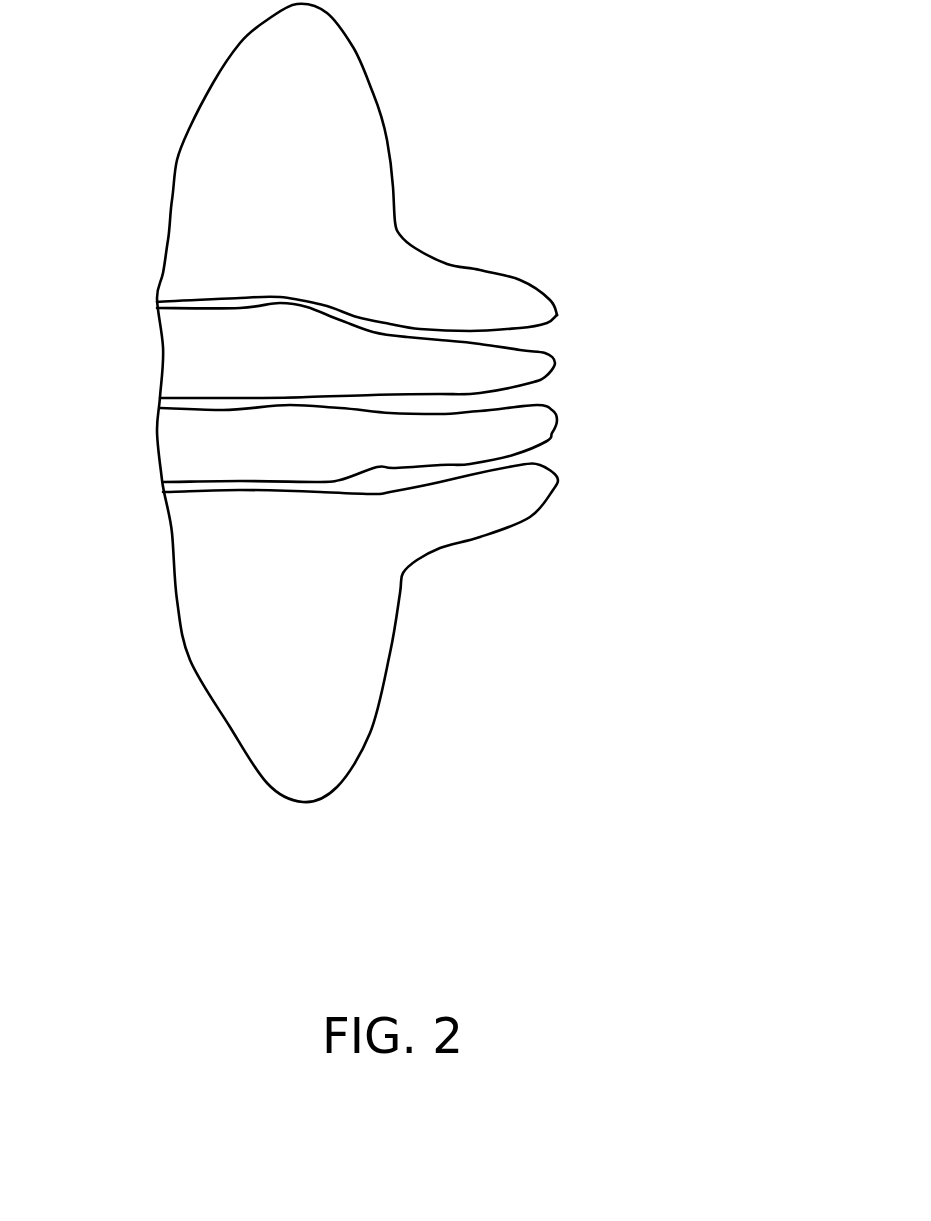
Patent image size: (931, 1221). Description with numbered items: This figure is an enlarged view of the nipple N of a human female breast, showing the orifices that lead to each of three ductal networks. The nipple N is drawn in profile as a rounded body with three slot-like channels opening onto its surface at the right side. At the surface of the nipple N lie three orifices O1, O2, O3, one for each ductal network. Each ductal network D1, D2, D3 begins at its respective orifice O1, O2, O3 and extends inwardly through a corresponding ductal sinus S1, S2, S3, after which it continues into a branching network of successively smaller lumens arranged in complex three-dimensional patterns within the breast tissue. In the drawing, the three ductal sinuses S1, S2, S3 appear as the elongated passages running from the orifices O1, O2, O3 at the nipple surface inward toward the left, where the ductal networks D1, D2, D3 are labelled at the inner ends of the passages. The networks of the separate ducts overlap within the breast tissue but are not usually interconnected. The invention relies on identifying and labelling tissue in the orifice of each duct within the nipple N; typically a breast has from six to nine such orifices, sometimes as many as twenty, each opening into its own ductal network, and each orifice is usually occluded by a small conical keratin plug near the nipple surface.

The nipple N is at (584, 419).
The ductal sinus S1 is at (382, 478).
The ductal sinus S2 is at (392, 403).
The ductal sinus S3 is at (367, 322).
The ductal network D1 is at (165, 473).
The ductal network D2 is at (158, 403).
The ductal network D3 is at (157, 302).
The orifice O1 is at (542, 452).
The orifice O2 is at (542, 395).
The orifice O3 is at (542, 337).